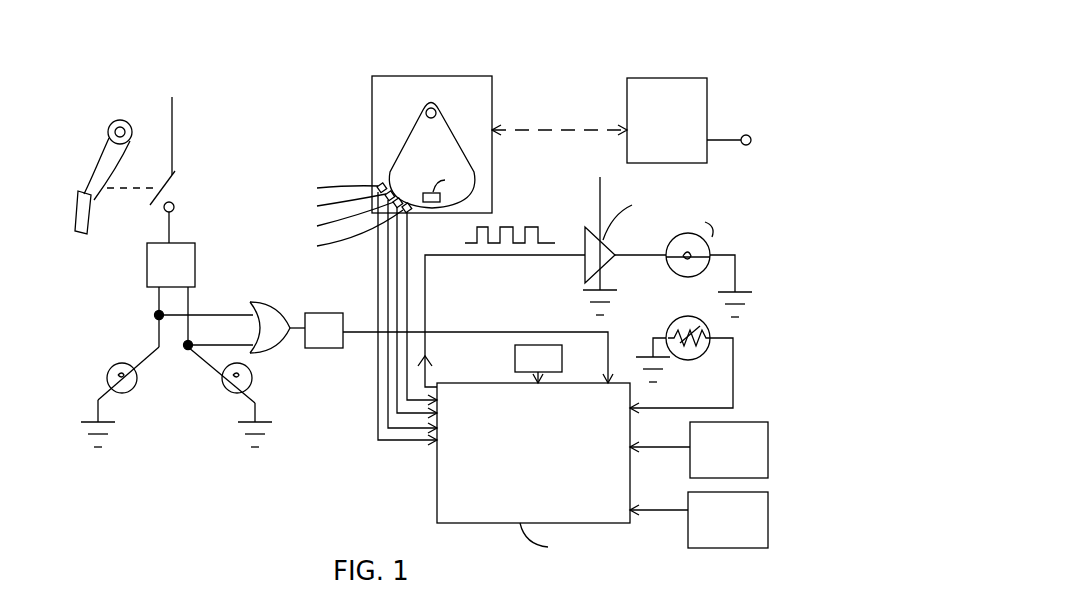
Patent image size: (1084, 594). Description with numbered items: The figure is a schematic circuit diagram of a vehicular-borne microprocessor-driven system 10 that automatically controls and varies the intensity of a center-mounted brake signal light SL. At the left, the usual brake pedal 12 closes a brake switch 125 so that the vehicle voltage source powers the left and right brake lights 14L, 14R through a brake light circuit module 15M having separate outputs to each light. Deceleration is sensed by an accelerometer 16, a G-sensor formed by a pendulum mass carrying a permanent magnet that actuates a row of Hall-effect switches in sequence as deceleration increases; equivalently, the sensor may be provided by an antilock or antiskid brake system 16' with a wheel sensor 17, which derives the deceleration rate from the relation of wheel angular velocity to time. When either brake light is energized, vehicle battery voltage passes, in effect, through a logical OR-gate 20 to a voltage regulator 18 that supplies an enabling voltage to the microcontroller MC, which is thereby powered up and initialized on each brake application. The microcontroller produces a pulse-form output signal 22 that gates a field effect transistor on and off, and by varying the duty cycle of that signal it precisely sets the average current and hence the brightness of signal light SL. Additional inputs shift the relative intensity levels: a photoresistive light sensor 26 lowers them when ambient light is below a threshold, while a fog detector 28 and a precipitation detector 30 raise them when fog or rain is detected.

The vehicular-borne microprocessor-driven system 10 is at (240, 473).
The brake pedal 12 is at (82, 236).
The brake switch 125 is at (174, 181).
The left brake light 14L is at (108, 376).
The right brake light 14R is at (252, 378).
The brake light circuit module 15M is at (197, 268).
The accelerometer 16 is at (401, 258).
The antilock or antiskid brake system 16' is at (688, 120).
The wheel sensor 17 is at (752, 137).
The voltage regulator 18 is at (330, 313).
The logical OR-gate 20 is at (279, 308).
The output signal 22 is at (425, 276).
The light sensor 26 is at (673, 320).
The fog detector 28 is at (740, 422).
The precipitation detector 30 is at (722, 548).